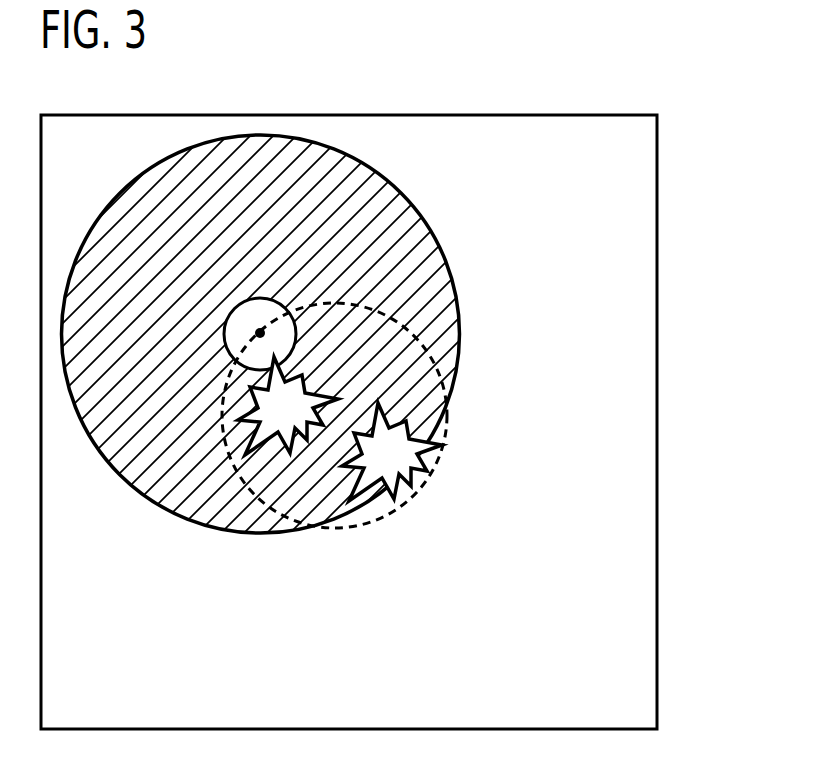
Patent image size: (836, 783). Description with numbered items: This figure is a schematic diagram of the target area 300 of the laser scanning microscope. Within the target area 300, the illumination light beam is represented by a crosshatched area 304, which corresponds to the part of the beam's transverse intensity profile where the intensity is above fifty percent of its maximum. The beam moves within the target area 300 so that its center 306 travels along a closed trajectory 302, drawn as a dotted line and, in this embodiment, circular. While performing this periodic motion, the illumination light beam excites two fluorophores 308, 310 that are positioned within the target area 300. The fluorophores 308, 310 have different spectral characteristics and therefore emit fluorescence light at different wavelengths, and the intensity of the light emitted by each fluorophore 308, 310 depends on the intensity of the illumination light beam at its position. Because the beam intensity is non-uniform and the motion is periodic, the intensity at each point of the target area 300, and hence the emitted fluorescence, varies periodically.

The target area 300 is at (657, 420).
The closed trajectory 302 is at (347, 532).
The crosshatched area 304 is at (458, 333).
The center 306 is at (260, 333).
The fluorophore 308 is at (250, 437).
The fluorophore 310 is at (440, 455).